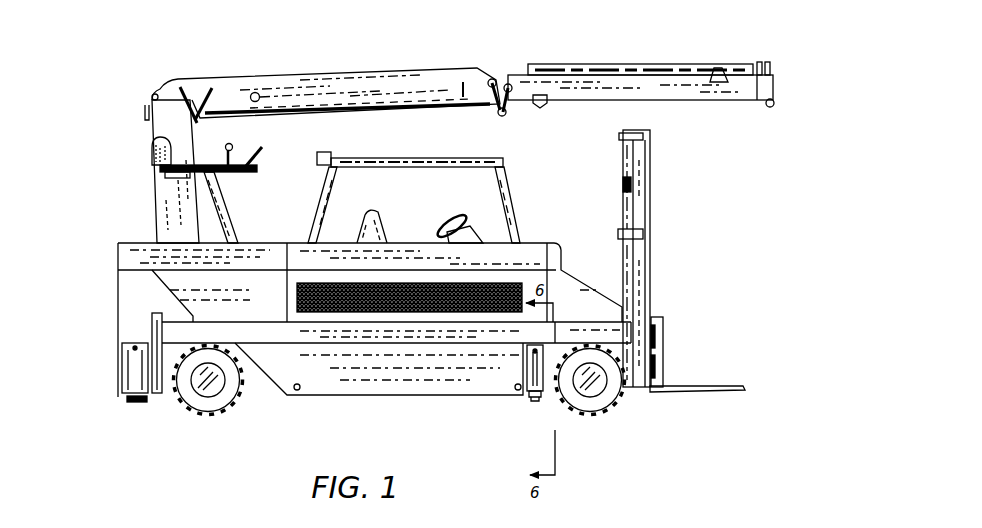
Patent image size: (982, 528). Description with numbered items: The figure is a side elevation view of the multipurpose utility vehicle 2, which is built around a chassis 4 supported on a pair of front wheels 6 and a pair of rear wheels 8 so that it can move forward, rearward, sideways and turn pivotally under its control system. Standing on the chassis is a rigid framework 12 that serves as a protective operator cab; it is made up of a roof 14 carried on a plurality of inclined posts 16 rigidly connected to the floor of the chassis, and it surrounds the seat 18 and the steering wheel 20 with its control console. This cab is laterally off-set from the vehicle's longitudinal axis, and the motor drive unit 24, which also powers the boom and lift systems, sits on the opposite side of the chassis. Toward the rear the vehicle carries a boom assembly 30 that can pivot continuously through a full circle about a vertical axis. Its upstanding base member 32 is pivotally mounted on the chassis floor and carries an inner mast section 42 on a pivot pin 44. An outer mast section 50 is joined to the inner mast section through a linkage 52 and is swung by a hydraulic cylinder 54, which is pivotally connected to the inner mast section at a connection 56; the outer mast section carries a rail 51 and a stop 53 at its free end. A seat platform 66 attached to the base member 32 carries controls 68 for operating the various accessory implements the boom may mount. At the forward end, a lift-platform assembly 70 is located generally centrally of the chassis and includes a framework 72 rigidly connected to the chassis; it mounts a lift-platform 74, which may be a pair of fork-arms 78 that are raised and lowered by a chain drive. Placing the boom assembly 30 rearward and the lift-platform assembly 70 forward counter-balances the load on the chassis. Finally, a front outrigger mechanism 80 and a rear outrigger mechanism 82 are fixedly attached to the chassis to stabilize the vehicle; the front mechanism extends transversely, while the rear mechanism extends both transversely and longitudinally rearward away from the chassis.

The multipurpose utility vehicle 2 is at (573, 57).
The chassis 4 is at (412, 376).
The front wheels 6 is at (598, 405).
The rear wheels 8 is at (192, 406).
The framework 12 is at (488, 160).
The roof 14 is at (368, 158).
The inclined posts 16 is at (316, 200).
The seat 18 is at (376, 214).
The steering wheel 20 is at (455, 216).
The motor drive unit 24 is at (548, 262).
The boom assembly 30 is at (242, 74).
The upstanding base member 32 is at (168, 192).
The inner mast section 42 is at (386, 76).
The pivot pin 44 is at (150, 97).
The outer mast section 50 is at (617, 90).
The rail 51 is at (618, 63).
The linkage 52 is at (504, 82).
The stop 53 is at (757, 66).
The hydraulic cylinder 54 is at (438, 103).
The pivotal connection 56 is at (262, 94).
The seat platform 66 is at (158, 152).
The controls 68 is at (235, 147).
The lift-platform assembly 70 is at (654, 200).
The framework 72 is at (640, 270).
The lift-platform 74 is at (708, 384).
The fork-arms 78 is at (710, 392).
The front outrigger mechanism 80 is at (520, 392).
The rear outrigger mechanism 82 is at (112, 389).